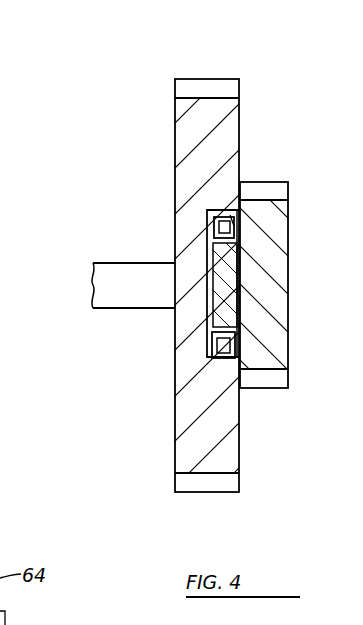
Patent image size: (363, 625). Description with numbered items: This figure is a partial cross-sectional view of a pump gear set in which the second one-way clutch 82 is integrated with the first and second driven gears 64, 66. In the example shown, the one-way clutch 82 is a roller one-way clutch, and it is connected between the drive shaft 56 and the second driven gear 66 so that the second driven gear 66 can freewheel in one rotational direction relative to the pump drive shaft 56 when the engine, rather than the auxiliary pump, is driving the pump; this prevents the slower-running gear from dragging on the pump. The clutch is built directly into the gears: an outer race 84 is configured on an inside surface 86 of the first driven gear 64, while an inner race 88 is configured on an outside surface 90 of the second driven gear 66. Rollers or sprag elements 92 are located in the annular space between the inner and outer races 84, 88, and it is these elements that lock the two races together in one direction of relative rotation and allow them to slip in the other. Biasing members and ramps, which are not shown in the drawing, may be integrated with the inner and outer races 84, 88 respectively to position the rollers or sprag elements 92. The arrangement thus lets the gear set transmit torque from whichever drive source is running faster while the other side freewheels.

The first driven gear 64 is at (186, 79).
The second driven gear 66 is at (268, 182).
The drive shaft 56 is at (105, 284).
The outer race 84 is at (236, 209).
The rollers or sprag elements 92 is at (222, 228).
The outside surface 90 is at (233, 226).
The inside surface 86 is at (216, 322).
The inner race 88 is at (213, 357).
The second one-way clutch 82 is at (221, 378).